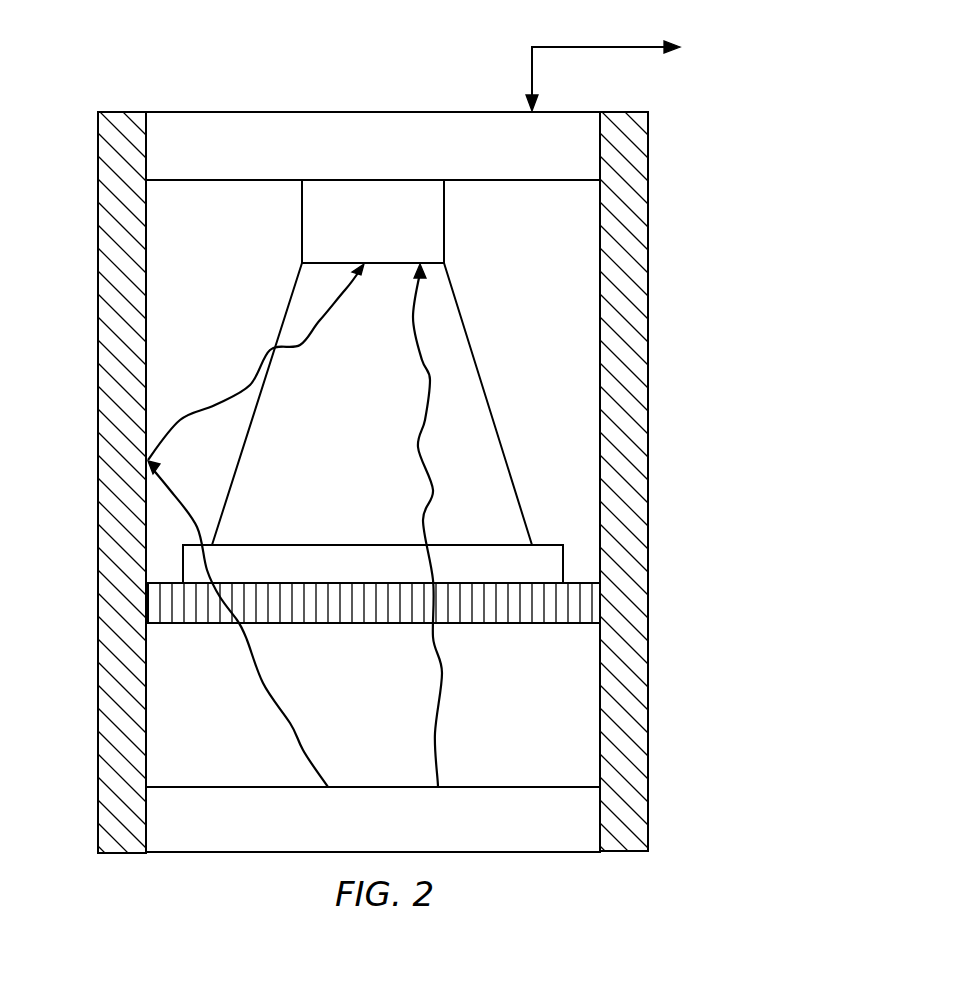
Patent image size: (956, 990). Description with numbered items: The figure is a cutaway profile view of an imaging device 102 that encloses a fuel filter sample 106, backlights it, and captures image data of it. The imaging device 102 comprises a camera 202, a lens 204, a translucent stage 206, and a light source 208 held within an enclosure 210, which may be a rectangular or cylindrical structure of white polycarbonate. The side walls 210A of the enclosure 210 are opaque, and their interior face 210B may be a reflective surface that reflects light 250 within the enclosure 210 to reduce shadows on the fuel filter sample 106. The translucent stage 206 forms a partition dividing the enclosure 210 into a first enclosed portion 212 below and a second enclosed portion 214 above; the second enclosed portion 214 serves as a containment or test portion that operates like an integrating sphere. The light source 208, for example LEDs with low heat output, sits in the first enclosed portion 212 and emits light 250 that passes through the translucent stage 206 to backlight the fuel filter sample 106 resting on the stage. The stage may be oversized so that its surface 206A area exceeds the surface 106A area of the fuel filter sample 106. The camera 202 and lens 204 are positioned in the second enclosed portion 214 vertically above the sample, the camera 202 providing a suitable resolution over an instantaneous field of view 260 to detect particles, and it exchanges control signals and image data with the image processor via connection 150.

The imaging device 102 is at (158, 55).
The connection 150 is at (586, 47).
The camera 202 is at (224, 112).
The lens 204 is at (446, 218).
The translucent stage 206 is at (598, 599).
The surface 206A is at (580, 582).
The light source 208 is at (523, 823).
The enclosure 210 is at (122, 364).
The side walls 210A is at (627, 288).
The interior face 210B is at (597, 197).
The first enclosed portion 212 is at (374, 705).
The second enclosed portion 214 is at (373, 362).
The fuel filter sample 106 is at (506, 545).
The surface 106A is at (468, 544).
The light 250 is at (292, 348).
The instantaneous field of view 260 is at (470, 323).